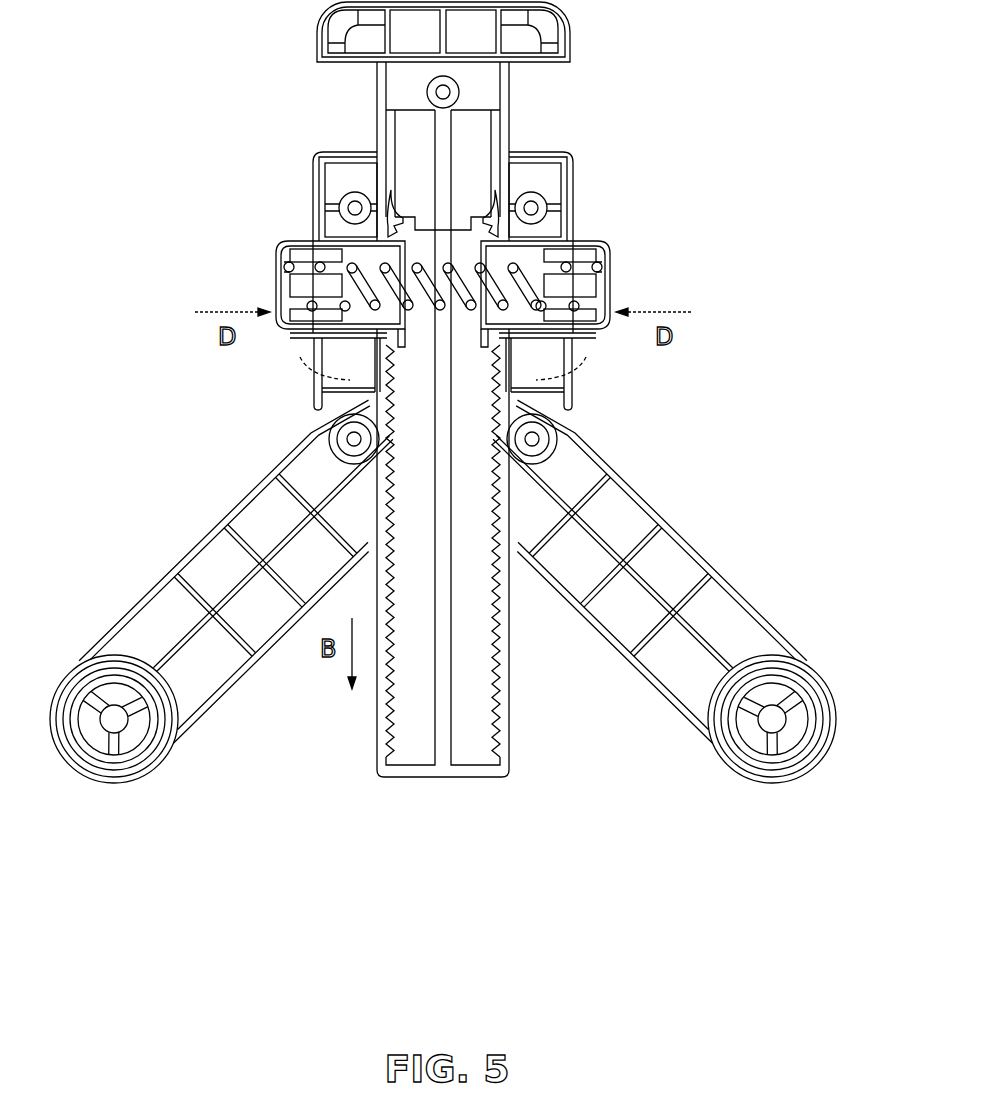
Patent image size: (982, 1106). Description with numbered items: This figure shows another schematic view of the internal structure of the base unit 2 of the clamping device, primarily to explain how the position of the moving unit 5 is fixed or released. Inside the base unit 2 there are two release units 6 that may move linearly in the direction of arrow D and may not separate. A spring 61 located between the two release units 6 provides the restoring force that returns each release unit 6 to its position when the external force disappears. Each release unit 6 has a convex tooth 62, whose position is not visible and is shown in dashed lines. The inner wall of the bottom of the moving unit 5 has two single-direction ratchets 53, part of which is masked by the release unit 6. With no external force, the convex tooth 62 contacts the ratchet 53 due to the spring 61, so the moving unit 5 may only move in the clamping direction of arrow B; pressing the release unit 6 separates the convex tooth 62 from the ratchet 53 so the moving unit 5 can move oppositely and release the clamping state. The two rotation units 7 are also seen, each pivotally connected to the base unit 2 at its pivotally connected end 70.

The base unit 2 is at (574, 186).
The moving unit 5 is at (487, 124).
The ratchet 53 is at (402, 218).
The release unit 6 is at (278, 275).
The spring 61 is at (550, 258).
The convex tooth 62 is at (338, 347).
The rotation unit 7 is at (178, 570).
The pivotally connected end 70 is at (336, 440).